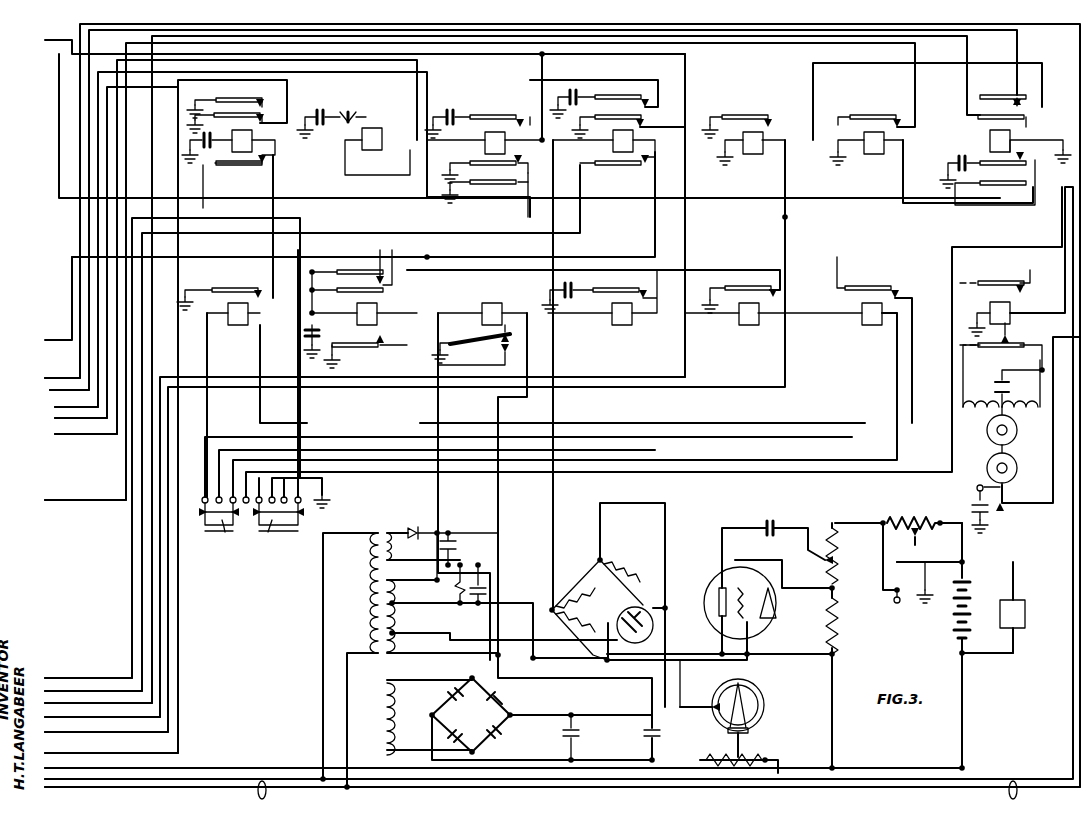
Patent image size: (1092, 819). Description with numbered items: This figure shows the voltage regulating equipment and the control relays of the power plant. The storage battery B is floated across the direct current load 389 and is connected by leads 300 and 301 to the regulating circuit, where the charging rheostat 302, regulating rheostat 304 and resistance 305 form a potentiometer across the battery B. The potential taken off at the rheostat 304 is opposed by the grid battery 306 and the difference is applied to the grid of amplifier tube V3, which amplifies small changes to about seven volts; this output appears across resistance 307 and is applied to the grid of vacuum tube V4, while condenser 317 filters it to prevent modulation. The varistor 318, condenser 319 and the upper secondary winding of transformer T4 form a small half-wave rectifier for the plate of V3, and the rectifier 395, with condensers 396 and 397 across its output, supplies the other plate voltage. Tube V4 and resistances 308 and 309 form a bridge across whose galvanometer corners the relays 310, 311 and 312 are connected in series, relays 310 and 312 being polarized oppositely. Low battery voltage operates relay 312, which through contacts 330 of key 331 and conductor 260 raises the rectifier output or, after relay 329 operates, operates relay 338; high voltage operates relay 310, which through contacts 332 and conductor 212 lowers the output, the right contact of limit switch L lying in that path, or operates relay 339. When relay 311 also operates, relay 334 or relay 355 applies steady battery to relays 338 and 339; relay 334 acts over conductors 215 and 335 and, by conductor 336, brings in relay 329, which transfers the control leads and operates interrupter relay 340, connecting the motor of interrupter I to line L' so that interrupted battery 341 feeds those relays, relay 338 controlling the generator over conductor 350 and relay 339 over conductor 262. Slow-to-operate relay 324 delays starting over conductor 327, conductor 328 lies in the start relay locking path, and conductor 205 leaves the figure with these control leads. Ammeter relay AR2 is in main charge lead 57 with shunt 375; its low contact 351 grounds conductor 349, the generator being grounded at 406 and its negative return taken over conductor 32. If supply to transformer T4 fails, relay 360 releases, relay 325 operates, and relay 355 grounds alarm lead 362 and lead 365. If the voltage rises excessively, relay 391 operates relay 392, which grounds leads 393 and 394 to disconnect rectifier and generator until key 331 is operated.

The lead 362 is at (45, 40).
The conductor 349 is at (59, 80).
The relay 392 is at (232, 152).
The slow-to-operate relay 324 is at (367, 150).
The relay 355 is at (485, 142).
The relay 334 is at (613, 142).
The relay 339 is at (752, 154).
The relay 338 is at (873, 154).
The relay 329 is at (990, 142).
The relay 391 is at (240, 326).
The relay 325 is at (357, 306).
The relay 360 is at (492, 303).
The polarized relay 310 is at (612, 306).
The relay 311 is at (749, 325).
The polarized relay 312 is at (862, 306).
The interrupter relay 340 is at (990, 306).
The interrupter I is at (1013, 440).
The interrupted battery 341 is at (988, 512).
The conductor 328 is at (62, 340).
The conductor 260 is at (60, 378).
The conductor 212 is at (52, 390).
The conductor 327 is at (55, 407).
The lead 393 is at (55, 418).
The conductor 205 is at (55, 434).
The conductor 350 is at (73, 500).
The lead 365 is at (132, 545).
The conductor 335 is at (142, 568).
The conductor 336 is at (152, 603).
The conductor 215 is at (160, 635).
The lead 394 is at (168, 660).
The conductor 262 is at (178, 690).
The main charge lead 57 is at (190, 768).
The conductor 32 is at (228, 779).
The line L' is at (172, 768).
The limit switch L is at (990, 767).
The lead 301 is at (898, 780).
The key 331 is at (228, 506).
The contacts of key 332 is at (222, 528).
The contacts of key 330 is at (272, 528).
The transformer T4 is at (388, 533).
The varistor 318 is at (414, 527).
The condenser 319 is at (470, 548).
The resistance 307 is at (458, 590).
The condenser 317 is at (490, 600).
The resistance 308 is at (579, 611).
The resistance 309 is at (622, 575).
The vacuum tube V4 is at (641, 607).
The amplifier tube V3 is at (722, 582).
The grid battery 306 is at (770, 521).
The regulating rheostat 304 is at (828, 548).
The resistance 305 is at (828, 625).
The charging rheostat 302 is at (875, 530).
The lead 300 is at (965, 562).
The storage battery B is at (970, 614).
The direct current load 389 is at (1025, 600).
The ground 406 is at (918, 600).
The ammeter relay AR2 is at (760, 706).
The low contact 351 is at (712, 704).
The ammeter shunt 375 is at (706, 758).
The rectifier 395 is at (519, 717).
The condenser 397 is at (560, 735).
The condenser 396 is at (642, 735).